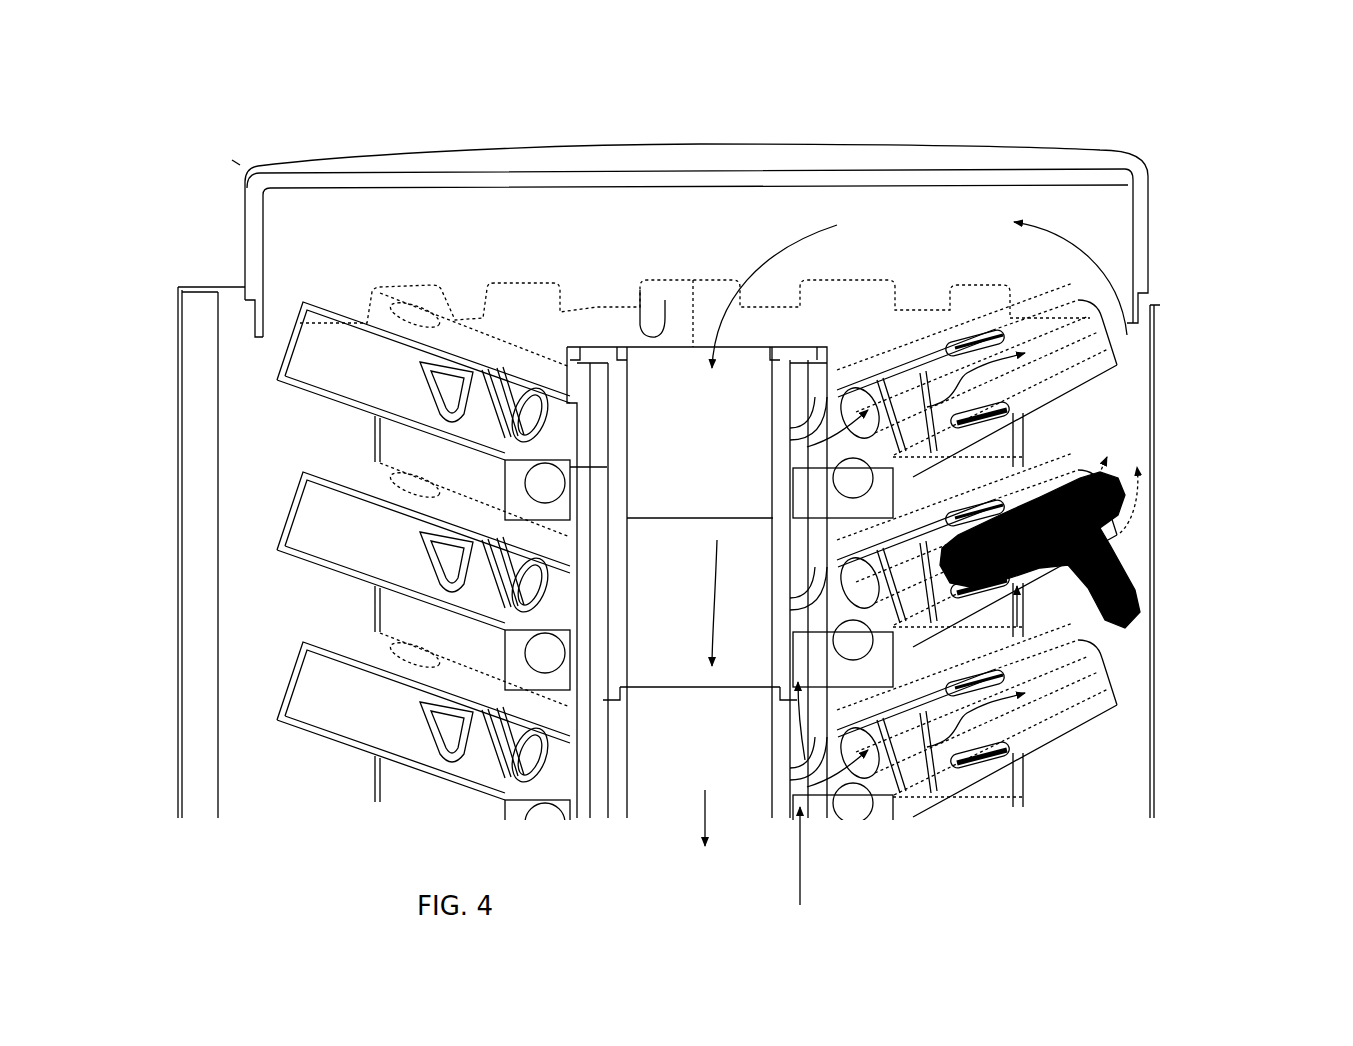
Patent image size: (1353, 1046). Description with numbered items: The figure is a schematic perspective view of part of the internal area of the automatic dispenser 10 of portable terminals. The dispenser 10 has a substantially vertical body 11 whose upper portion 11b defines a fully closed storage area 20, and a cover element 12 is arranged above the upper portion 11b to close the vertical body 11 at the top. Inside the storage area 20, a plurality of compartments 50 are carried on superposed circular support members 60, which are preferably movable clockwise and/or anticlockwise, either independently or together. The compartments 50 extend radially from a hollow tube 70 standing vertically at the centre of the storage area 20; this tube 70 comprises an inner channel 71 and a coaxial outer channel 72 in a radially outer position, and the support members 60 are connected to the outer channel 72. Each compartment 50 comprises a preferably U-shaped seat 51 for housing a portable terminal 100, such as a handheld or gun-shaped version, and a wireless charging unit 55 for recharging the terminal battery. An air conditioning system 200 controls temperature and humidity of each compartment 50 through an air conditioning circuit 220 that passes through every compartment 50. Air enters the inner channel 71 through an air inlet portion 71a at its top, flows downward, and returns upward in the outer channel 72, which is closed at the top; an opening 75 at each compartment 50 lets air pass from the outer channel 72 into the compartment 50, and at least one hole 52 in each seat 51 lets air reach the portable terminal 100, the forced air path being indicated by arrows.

The automatic dispenser 10 is at (229, 157).
The vertical body 11 is at (176, 340).
The upper portion 11b is at (1165, 450).
The cover element 12 is at (1172, 225).
The storage area 20 is at (1094, 421).
The compartment 50 is at (985, 585).
The seat 51 is at (1020, 585).
The hole 52 is at (876, 805).
The wireless charging unit 55 is at (1050, 625).
The support member 60 is at (340, 318).
The tube 70 is at (703, 292).
The inner channel 71 is at (628, 340).
The air inlet portion 71a is at (666, 356).
The outer channel 72 is at (822, 385).
The opening 75 is at (793, 608).
The portable terminal 100 is at (1155, 525).
The air conditioning system 200 is at (785, 256).
The air conditioning circuit 220 is at (815, 830).